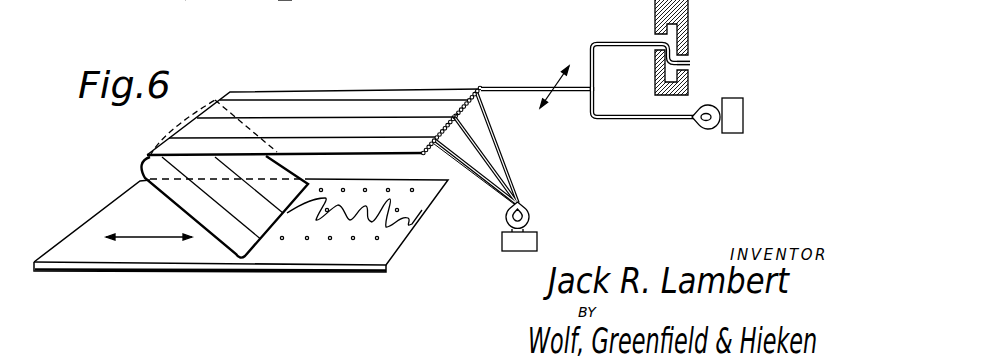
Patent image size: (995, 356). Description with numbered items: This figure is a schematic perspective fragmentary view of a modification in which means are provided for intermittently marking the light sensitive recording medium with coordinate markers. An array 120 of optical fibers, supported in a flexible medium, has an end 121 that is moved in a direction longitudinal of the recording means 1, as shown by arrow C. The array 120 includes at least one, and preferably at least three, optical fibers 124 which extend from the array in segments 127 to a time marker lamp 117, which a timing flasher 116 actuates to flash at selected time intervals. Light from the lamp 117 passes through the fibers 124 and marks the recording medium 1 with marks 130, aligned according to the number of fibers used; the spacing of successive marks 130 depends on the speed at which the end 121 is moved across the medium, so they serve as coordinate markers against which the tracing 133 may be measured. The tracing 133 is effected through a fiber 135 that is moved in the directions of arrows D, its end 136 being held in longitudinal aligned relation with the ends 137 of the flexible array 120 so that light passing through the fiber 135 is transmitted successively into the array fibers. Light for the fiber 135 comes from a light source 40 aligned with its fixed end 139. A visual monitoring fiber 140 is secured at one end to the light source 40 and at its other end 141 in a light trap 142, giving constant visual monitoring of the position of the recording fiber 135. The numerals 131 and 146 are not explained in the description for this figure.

The recording means 1 is at (193, 256).
The light source 40 is at (713, 133).
The timing flasher 116 is at (520, 241).
The time marker lamp 117 is at (530, 217).
The array of optical fibers 120 is at (380, 107).
The end of the optical array 121 is at (242, 258).
The optical fibers 124 is at (333, 137).
The segments 127 is at (474, 168).
The marks 130 is at (353, 246).
The member 131 is at (289, 4).
The tracing 133 is at (390, 228).
The fiber 135 is at (517, 87).
The end of optical fiber 136 is at (480, 87).
The ends of the flexible array 137 is at (457, 115).
The fixed end of the fiber 139 is at (694, 123).
The visual monitoring fiber 140 is at (614, 43).
The other end of monitoring fiber 141 is at (691, 62).
The light trap 142 is at (689, 8).
The member 146 is at (185, 0).